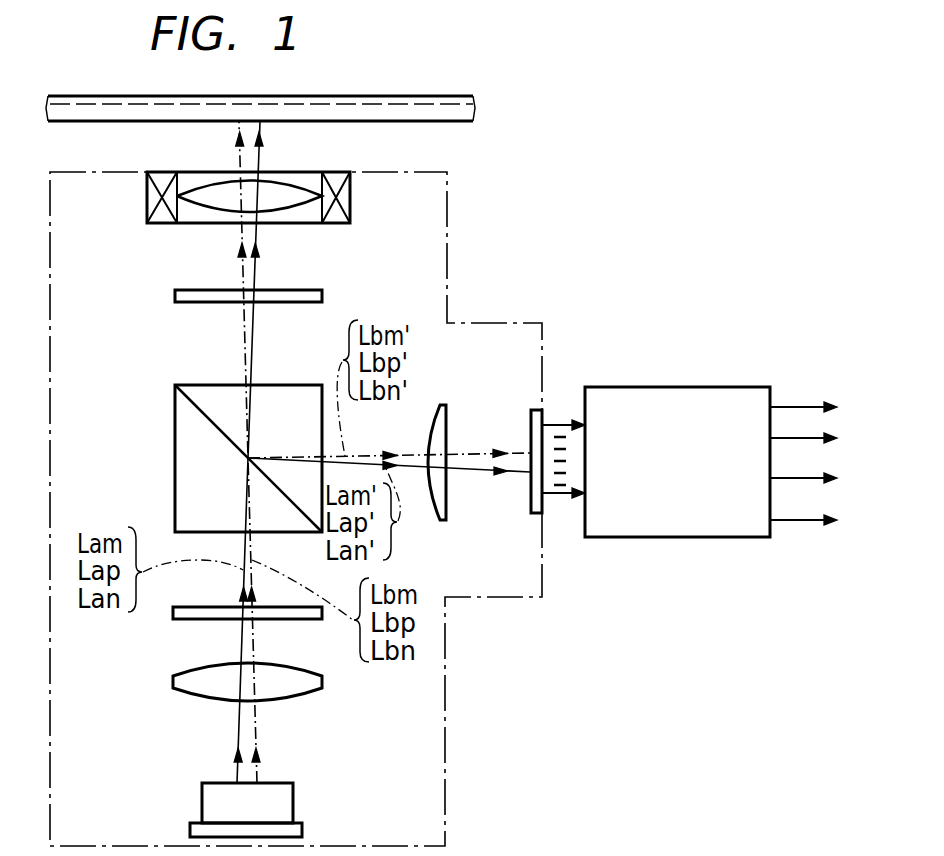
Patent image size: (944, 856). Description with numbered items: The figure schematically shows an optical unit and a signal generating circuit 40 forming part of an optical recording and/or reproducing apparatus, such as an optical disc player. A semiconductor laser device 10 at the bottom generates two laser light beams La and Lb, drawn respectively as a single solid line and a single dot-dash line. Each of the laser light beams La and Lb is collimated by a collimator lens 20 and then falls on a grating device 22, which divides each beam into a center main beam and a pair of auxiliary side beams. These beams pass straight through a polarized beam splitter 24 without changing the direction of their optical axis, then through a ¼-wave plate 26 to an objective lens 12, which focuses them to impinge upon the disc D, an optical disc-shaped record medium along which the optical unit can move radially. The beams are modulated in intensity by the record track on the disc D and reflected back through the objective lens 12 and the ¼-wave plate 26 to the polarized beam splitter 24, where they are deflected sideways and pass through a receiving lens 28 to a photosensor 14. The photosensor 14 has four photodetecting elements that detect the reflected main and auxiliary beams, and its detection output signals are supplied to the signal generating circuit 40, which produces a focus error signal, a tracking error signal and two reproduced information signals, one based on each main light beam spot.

The disc D is at (440, 97).
The objective lens 12 is at (300, 210).
The ¼-wave plate 26 is at (192, 290).
The polarized beam splitter 24 is at (198, 385).
The receiving lens 28 is at (450, 415).
The photosensor 14 is at (532, 497).
The signal generating circuit 40 is at (627, 387).
The grating device 22 is at (200, 620).
The collimator lens 20 is at (322, 680).
The semiconductor laser device 10 is at (202, 808).
The laser light beam La is at (237, 724).
The laser light beam Lb is at (257, 742).